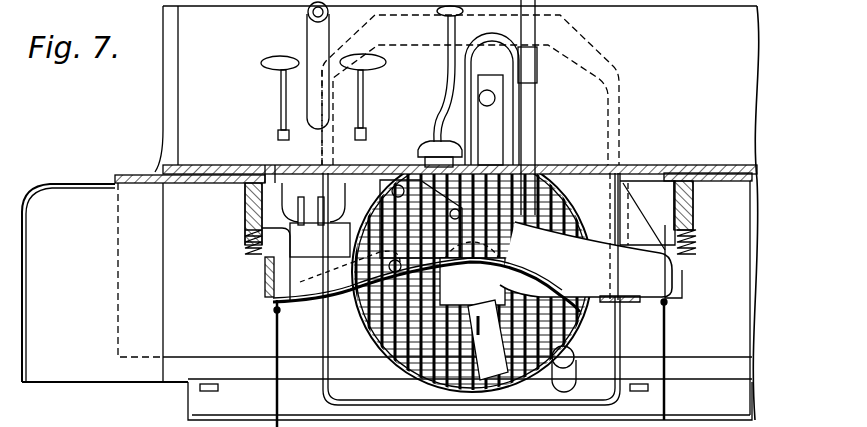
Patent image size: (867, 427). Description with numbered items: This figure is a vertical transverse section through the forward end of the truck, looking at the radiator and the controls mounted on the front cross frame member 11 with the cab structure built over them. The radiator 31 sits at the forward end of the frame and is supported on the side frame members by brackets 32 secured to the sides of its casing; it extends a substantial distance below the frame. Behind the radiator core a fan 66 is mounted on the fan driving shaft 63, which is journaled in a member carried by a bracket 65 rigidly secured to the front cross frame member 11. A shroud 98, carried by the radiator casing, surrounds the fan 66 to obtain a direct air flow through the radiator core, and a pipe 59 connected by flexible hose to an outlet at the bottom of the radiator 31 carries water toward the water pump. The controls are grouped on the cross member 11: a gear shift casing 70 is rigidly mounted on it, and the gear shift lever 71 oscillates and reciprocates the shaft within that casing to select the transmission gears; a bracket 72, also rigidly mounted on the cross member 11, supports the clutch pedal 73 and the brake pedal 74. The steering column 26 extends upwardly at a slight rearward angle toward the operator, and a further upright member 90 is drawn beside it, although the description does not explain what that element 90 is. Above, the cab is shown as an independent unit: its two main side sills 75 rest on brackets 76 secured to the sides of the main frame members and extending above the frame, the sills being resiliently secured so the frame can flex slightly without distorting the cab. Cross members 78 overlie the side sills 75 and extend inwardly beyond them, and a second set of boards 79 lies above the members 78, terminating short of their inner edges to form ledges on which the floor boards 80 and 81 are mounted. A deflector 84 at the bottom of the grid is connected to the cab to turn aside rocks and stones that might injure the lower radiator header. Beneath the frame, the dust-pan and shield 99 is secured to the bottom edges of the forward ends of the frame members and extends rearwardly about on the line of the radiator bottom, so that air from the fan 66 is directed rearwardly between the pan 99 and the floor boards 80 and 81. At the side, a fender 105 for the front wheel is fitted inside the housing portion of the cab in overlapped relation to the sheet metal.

The front cross frame member 11 is at (668, 290).
The steering column 26 is at (308, 32).
The radiator 31 is at (572, 172).
The brackets 32 is at (628, 205).
The pipe 59 is at (574, 372).
The fan driving shaft 63 is at (375, 362).
The bracket 65 is at (368, 334).
The fan 66 is at (582, 222).
The gear shift casing 70 is at (418, 200).
The gear shift lever 71 is at (447, 67).
The bracket 72 is at (268, 250).
The clutch pedal 73 is at (280, 95).
The brake pedal 74 is at (364, 93).
The side sills 75 is at (244, 203).
The brackets 76 is at (268, 282).
The cross members 78 is at (140, 178).
The boards 79 is at (240, 168).
The floor board 80 is at (272, 168).
The floor board 81 is at (640, 167).
The deflector 84 is at (200, 404).
The tube 90 is at (521, 133).
The shroud 98 is at (598, 331).
The dust-pan and shield 99 is at (668, 401).
The fenders 105 is at (70, 186).